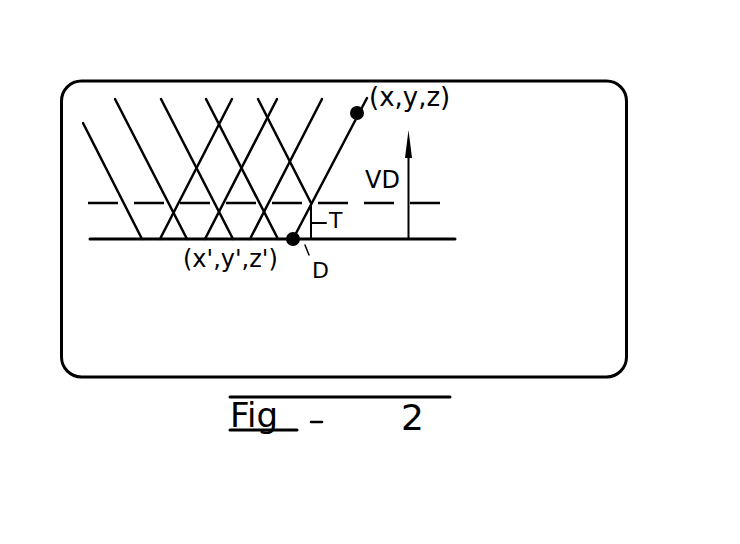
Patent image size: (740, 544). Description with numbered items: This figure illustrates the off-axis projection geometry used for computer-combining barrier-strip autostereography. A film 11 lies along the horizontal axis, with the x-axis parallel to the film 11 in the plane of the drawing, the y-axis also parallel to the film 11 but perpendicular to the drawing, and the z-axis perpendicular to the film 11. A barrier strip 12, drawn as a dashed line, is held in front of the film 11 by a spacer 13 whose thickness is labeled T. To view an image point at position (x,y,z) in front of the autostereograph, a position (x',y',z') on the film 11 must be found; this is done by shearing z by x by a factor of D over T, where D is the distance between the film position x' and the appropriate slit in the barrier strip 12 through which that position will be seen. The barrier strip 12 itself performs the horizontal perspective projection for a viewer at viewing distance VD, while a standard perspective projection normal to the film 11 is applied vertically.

The film 11 is at (409, 240).
The barrier strip 12 is at (437, 203).
The spacer 13 is at (96, 221).